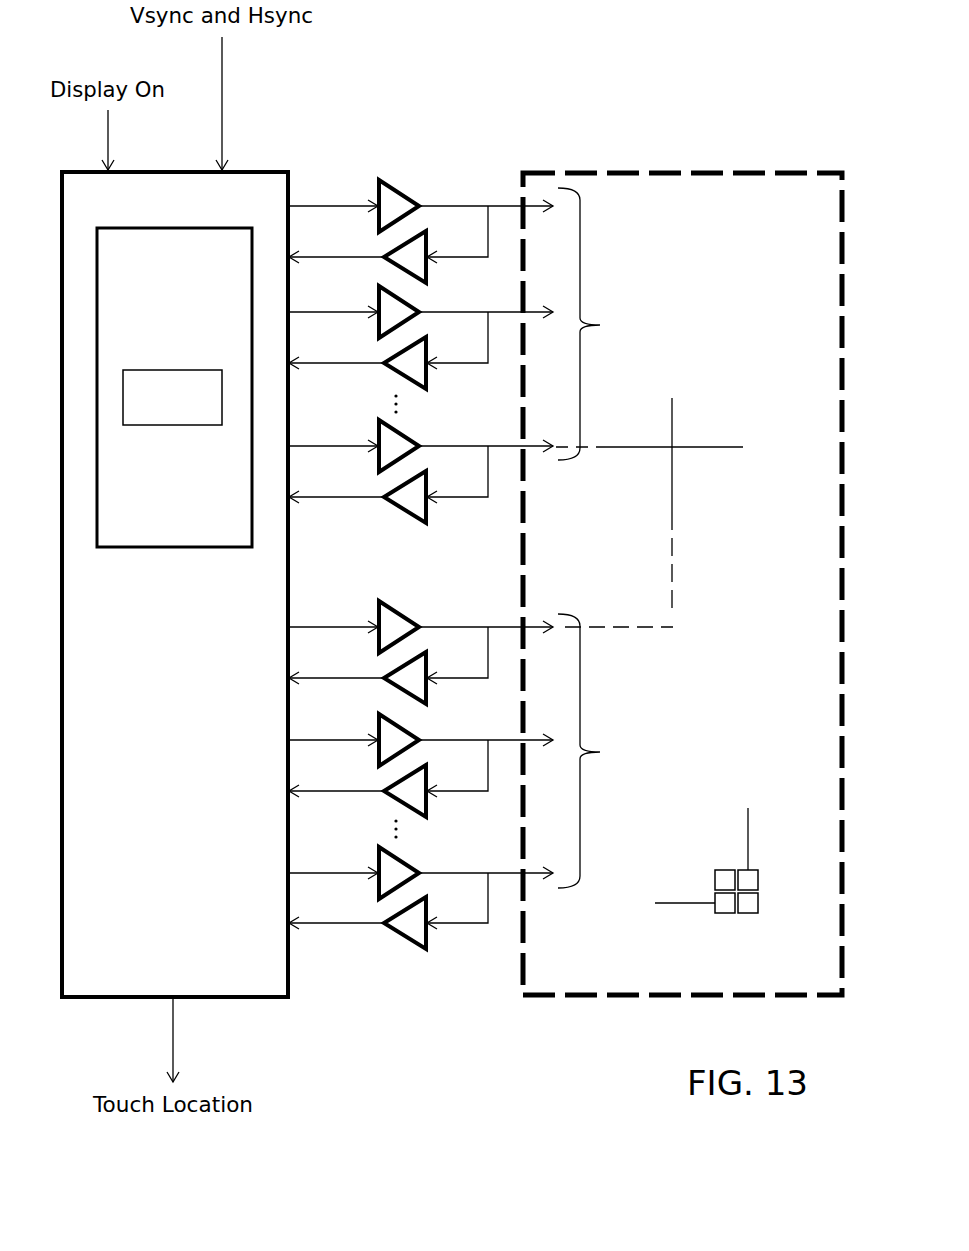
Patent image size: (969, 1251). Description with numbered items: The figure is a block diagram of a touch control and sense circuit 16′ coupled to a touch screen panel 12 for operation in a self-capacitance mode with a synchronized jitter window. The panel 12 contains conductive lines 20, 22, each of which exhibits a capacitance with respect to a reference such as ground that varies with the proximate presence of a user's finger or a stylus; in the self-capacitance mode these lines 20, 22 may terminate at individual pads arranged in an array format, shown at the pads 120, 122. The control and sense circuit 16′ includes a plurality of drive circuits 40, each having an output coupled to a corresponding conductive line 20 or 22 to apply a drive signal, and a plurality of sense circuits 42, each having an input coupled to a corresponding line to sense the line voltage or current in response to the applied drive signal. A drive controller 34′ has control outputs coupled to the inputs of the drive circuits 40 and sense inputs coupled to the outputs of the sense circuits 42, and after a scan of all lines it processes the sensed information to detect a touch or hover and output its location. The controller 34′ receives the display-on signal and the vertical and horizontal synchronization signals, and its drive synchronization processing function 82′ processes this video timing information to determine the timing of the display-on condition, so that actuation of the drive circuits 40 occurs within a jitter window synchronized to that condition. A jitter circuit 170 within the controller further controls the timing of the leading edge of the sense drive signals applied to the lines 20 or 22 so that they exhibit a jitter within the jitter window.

The touch screen panel 12 is at (597, 998).
The touch control and sense circuit 16′ is at (381, 1050).
The conductive line 20 is at (708, 445).
The conductive line 22 is at (680, 616).
The drive controller 34′ is at (193, 748).
The drive circuit 40 is at (397, 190).
The sense circuit 42 is at (400, 936).
The drive synchronization processing function 82′ is at (198, 336).
The pad 120 is at (746, 880).
The pad 122 is at (725, 898).
The jitter circuit 170 is at (172, 427).